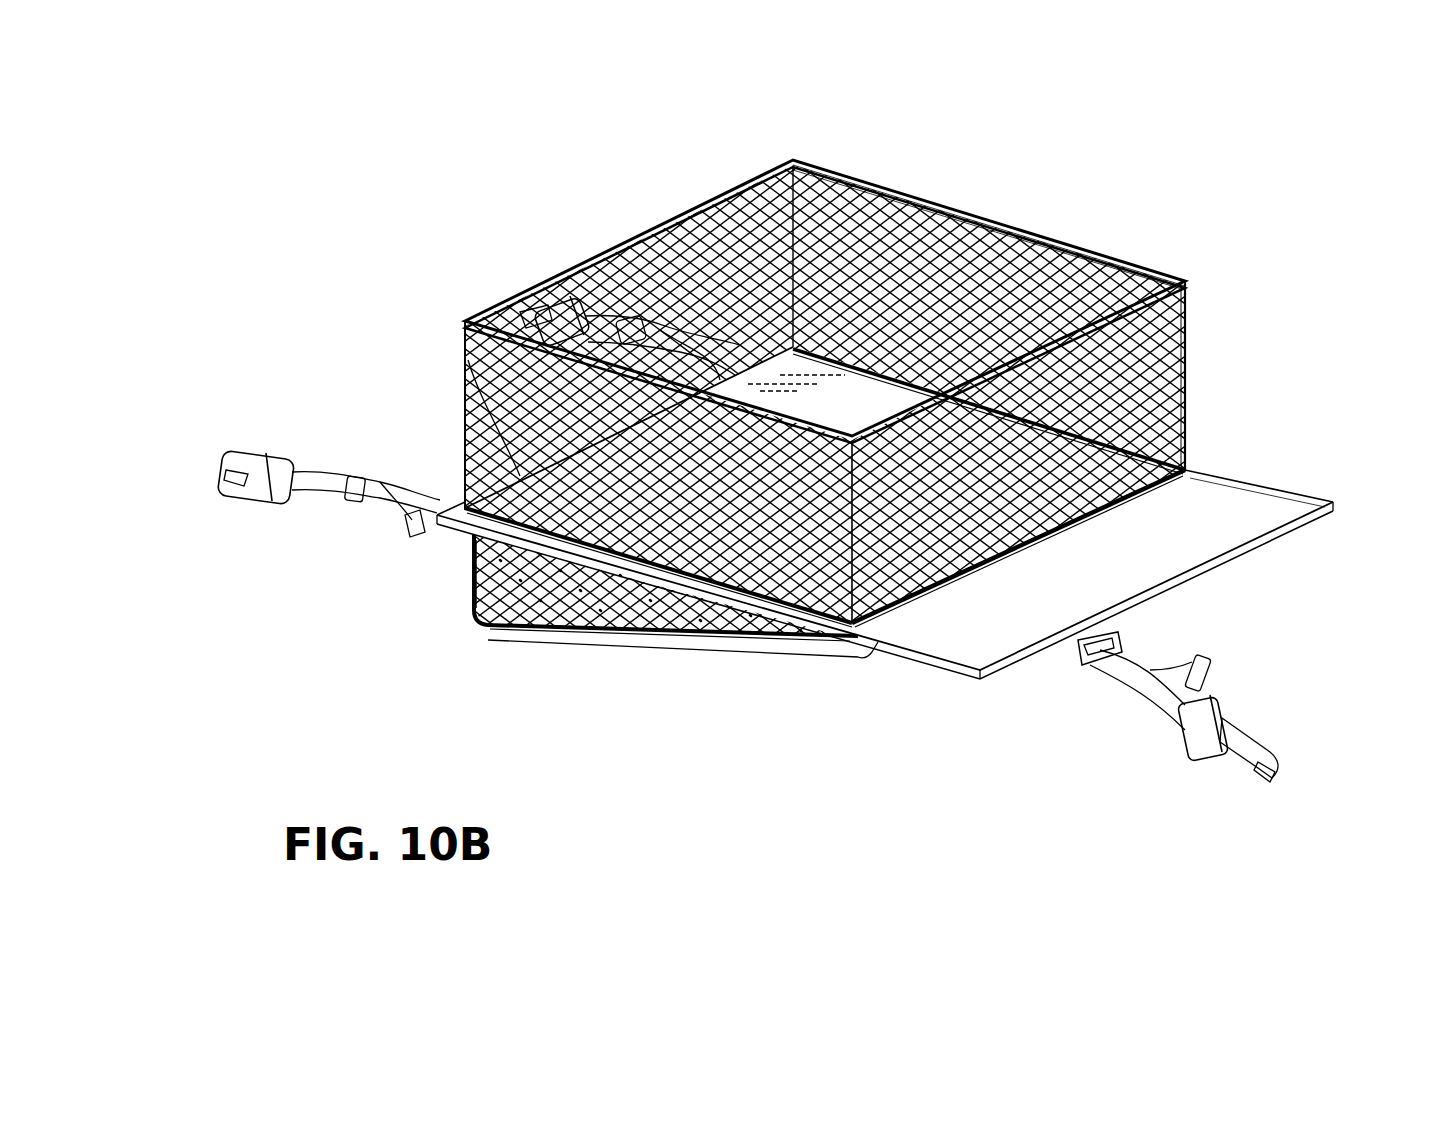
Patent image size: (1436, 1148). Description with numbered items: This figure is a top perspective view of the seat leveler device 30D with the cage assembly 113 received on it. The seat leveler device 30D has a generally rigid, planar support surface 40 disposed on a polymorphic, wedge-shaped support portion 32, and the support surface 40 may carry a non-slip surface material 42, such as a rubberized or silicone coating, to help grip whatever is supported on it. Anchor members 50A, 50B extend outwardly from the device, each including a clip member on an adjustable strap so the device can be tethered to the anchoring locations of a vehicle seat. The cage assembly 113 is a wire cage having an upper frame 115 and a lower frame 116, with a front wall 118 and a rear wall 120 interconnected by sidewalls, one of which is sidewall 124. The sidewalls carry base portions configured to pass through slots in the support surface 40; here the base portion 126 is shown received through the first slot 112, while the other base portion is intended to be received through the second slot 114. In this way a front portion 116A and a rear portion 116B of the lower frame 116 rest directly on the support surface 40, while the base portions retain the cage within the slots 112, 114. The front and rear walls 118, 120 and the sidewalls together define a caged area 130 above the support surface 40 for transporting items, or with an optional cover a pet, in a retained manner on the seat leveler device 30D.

The cage assembly 113 is at (1036, 196).
The sidewall 124 is at (905, 247).
The rear wall 120 is at (638, 290).
The upper frame 115 is at (1134, 253).
The front wall 118 is at (1182, 362).
The caged area 130 is at (862, 427).
The second slot 114 is at (1198, 463).
The lower frame 116 is at (1122, 512).
The front portion 116A is at (955, 572).
The rear portion 116B is at (520, 476).
The seat leveler device 30D is at (1272, 398).
The support surface 40 is at (1265, 474).
The non-slip surface material 42 is at (1297, 510).
The support portion 32 is at (617, 648).
The base portion 126 is at (471, 572).
The first slot 112 is at (763, 606).
The anchor member 50A is at (552, 315).
The anchor member 50B is at (1230, 706).